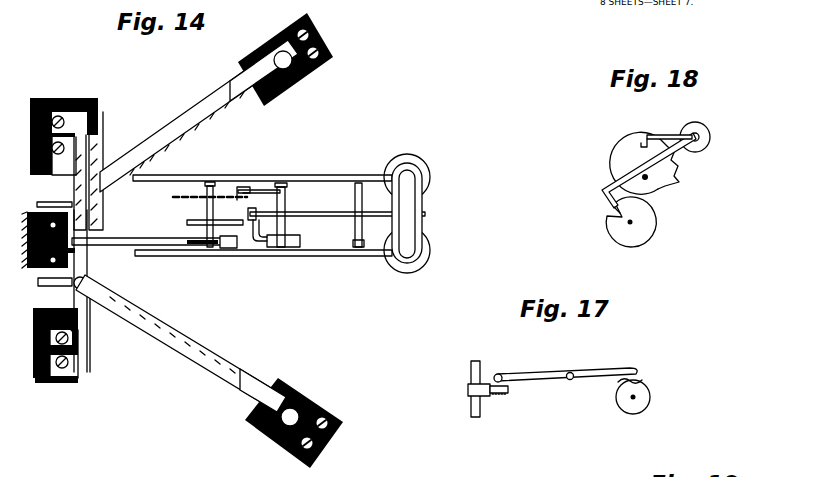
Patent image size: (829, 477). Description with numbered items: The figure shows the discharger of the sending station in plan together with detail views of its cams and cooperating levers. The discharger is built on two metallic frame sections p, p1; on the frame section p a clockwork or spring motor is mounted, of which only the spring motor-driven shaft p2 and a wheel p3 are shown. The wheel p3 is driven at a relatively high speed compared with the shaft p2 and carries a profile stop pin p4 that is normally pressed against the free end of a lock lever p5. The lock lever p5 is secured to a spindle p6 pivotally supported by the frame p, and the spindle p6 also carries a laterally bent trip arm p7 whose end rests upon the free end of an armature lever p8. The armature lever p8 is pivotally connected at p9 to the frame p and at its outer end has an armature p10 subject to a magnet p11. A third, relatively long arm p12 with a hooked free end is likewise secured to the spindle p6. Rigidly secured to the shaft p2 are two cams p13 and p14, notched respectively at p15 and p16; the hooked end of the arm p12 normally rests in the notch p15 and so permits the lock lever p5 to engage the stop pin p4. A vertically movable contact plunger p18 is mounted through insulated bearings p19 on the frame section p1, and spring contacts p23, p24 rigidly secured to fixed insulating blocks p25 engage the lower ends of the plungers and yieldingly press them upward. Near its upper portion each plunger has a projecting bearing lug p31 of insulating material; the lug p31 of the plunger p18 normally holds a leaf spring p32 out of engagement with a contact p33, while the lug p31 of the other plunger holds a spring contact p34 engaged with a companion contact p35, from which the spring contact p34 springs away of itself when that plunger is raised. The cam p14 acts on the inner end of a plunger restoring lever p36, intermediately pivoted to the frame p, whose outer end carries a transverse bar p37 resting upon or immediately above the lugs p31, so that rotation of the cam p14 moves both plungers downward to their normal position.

In FIG. 14, the frame section p is at (337, 177).
In FIG. 14, the frame section p1 is at (30, 207).
In FIG. 14, the spring motor-driven shaft p2 is at (213, 205).
In FIG. 18, the spring motor-driven shaft p2 is at (632, 223).
In FIG. 17, the spring motor-driven shaft p2 is at (637, 397).
In FIG. 14, the wheel p3 is at (189, 195).
In FIG. 18, the wheel p3 is at (622, 157).
In FIG. 14, the profile stop pin p4 is at (237, 188).
In FIG. 18, the profile stop pin p4 is at (642, 142).
In FIG. 14, the lock lever p5 is at (265, 190).
In FIG. 18, the lock lever p5 is at (663, 136).
In FIG. 14, the spindle p6 is at (285, 202).
In FIG. 18, the spindle p6 is at (710, 143).
In FIG. 14, the trip arm p7 is at (255, 247).
In FIG. 14, the armature lever p8 is at (333, 208).
In FIG. 14, the pivot p9 is at (358, 250).
In FIG. 14, the armature p10 is at (411, 222).
In FIG. 14, the magnet p11 is at (425, 257).
In FIG. 18, the arm p12 is at (622, 180).
In FIG. 14, the cam p13 is at (190, 222).
In FIG. 18, the cam p13 is at (647, 220).
In FIG. 14, the cam p14 is at (232, 248).
In FIG. 17, the cam p14 is at (648, 402).
In FIG. 18, the notch p15 is at (620, 212).
In FIG. 17, the notch p16 is at (620, 385).
In FIG. 14, the contact plunger p18 is at (87, 257).
In FIG. 14, the insulated bearing p19 is at (34, 278).
In FIG. 14, the spring contact p23 is at (213, 100).
In FIG. 14, the spring contact p24 is at (220, 378).
In FIG. 14, the insulating block p25 is at (333, 60).
In FIG. 17, the bearing lug p31 is at (470, 390).
In FIG. 14, the leaf spring p32 is at (74, 331).
In FIG. 17, the leaf spring p32 is at (507, 398).
In FIG. 14, the contact p33 is at (83, 337).
In FIG. 14, the spring contact p34 is at (90, 147).
In FIG. 14, the companion contact p35 is at (90, 170).
In FIG. 14, the plunger restoring lever p36 is at (125, 238).
In FIG. 17, the plunger restoring lever p36 is at (557, 360).
In FIG. 14, the transverse bar p37 is at (90, 273).
In FIG. 17, the transverse bar p37 is at (500, 374).